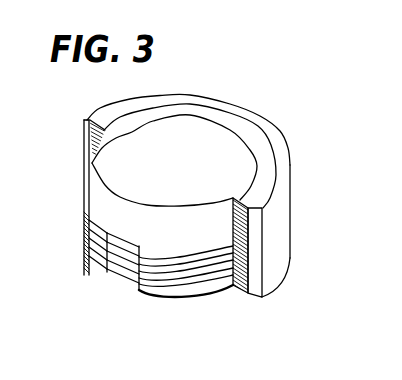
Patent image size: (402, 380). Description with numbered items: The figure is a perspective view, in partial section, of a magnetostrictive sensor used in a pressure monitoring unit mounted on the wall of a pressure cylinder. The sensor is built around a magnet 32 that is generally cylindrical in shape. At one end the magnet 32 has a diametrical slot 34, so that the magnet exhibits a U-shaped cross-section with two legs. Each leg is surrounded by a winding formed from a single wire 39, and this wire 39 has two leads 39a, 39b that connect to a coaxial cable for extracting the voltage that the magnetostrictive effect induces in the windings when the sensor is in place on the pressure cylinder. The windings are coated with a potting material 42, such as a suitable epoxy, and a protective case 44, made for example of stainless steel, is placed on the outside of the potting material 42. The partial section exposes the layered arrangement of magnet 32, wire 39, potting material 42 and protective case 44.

The magnet 32 is at (192, 181).
The diametrical slot 34 is at (100, 292).
The wire 39 is at (118, 292).
The lead 39a is at (100, 277).
The lead 39b is at (114, 297).
The potting material 42 is at (252, 135).
The protective case 44 is at (281, 229).